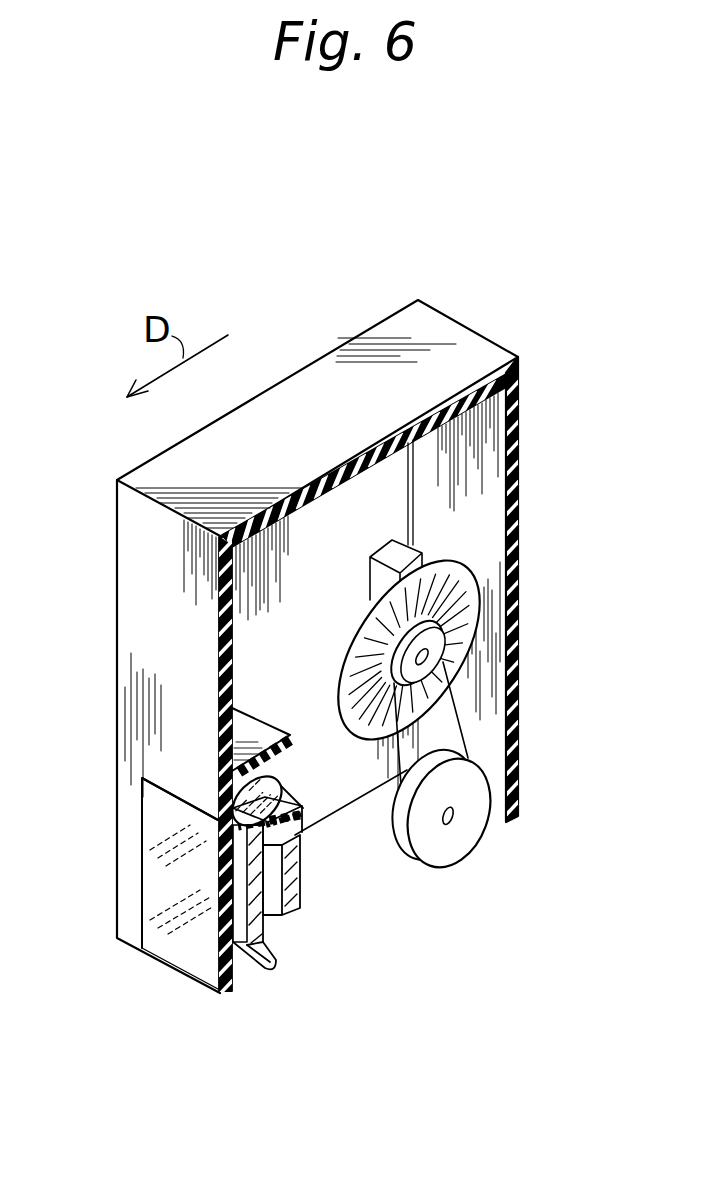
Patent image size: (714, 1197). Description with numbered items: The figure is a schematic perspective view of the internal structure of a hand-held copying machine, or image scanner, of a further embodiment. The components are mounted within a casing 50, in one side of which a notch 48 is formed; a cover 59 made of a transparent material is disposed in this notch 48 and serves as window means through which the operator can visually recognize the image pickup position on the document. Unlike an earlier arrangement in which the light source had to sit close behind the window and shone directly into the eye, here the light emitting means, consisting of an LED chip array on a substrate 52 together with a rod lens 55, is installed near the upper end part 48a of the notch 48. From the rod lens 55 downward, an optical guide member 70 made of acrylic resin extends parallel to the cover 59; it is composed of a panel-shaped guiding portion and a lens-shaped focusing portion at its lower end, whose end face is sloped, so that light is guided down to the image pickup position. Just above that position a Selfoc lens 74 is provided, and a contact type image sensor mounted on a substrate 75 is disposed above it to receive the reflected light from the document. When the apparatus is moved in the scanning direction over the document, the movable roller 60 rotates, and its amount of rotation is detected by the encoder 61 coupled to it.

The casing 50 is at (458, 338).
The notch 48 is at (140, 875).
The upper end part of the notch 48a is at (168, 795).
The cover 59 is at (180, 950).
The circuit substrate 52 is at (252, 727).
The rod lens 55 is at (282, 778).
The substrate 75 is at (298, 818).
The Selfoc lens 74 is at (300, 883).
The optical guide member 70 is at (263, 943).
The encoder 61 is at (468, 583).
The movable roller 60 is at (462, 834).